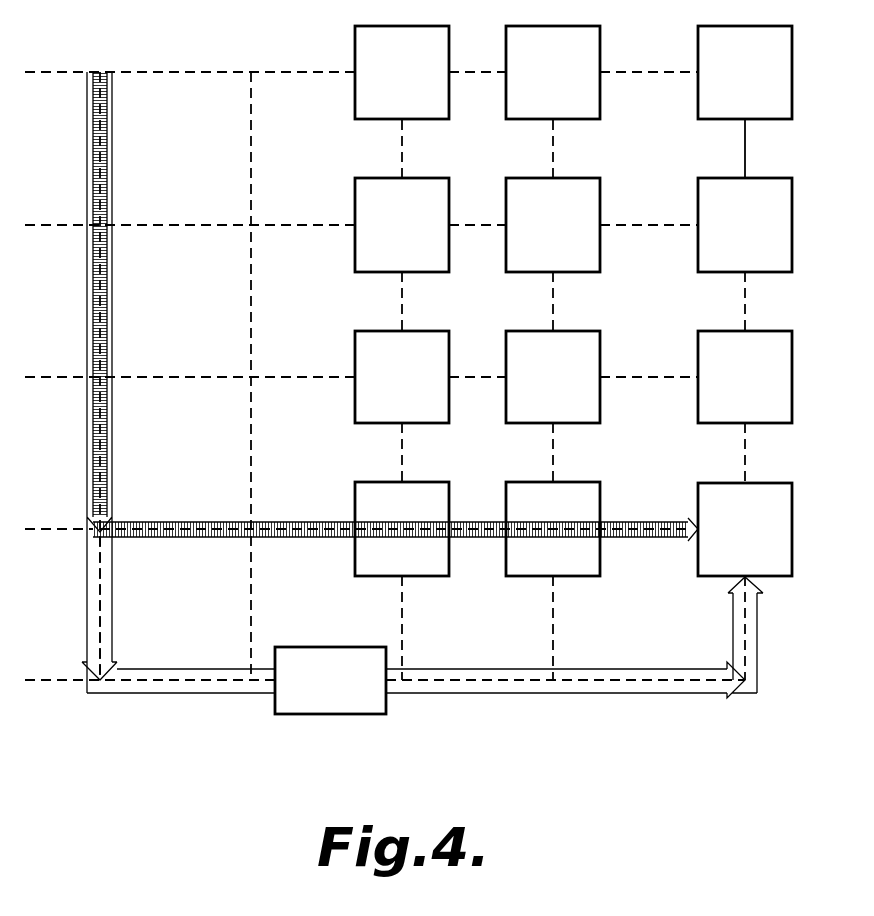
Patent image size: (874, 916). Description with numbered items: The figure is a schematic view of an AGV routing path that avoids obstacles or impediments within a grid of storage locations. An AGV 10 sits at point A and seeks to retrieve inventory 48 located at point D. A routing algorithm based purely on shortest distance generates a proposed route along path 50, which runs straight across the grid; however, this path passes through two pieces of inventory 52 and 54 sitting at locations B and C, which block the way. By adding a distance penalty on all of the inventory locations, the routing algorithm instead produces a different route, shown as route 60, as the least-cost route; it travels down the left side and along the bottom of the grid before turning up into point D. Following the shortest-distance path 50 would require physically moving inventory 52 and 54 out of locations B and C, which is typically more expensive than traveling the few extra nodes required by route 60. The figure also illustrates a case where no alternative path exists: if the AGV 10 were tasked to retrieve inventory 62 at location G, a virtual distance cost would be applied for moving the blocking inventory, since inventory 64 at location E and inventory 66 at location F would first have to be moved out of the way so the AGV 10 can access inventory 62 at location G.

The AGV 10 is at (346, 689).
The inventory 48 is at (786, 528).
The path 50 is at (173, 522).
The inventory 52 is at (362, 500).
The inventory 54 is at (601, 501).
The route 60 is at (88, 568).
The inventory 62 is at (786, 350).
The inventory 64 is at (362, 345).
The inventory 66 is at (601, 344).